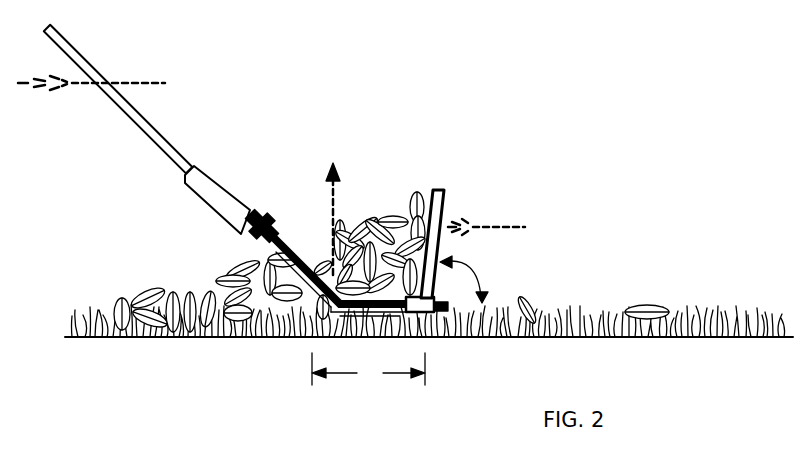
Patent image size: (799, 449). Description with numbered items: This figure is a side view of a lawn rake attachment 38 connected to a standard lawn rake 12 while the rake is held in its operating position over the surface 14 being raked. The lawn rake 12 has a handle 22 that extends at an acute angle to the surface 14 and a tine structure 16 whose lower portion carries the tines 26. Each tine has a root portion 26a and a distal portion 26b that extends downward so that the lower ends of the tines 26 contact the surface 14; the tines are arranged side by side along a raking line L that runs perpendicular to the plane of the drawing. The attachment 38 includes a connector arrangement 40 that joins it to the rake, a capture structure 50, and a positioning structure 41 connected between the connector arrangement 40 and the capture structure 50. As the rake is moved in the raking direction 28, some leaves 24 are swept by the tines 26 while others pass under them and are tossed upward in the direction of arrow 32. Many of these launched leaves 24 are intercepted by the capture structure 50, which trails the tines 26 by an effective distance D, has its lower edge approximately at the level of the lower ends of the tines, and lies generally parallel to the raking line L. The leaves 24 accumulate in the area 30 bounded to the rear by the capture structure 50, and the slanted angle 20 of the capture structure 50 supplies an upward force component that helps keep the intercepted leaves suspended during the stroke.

The lawn rake 12 is at (290, 217).
The surface 14 is at (743, 302).
The tine structure 16 is at (210, 173).
The slanted angle 20 is at (476, 263).
The handle 22 is at (140, 133).
The leaves 24 is at (232, 272).
The tines 26 is at (299, 317).
The root portion 26a is at (260, 252).
The distal portion 26b is at (300, 325).
The raking direction 28 is at (288, 144).
The area 30 is at (370, 176).
The arrow 32 is at (325, 203).
The lawn rake attachment 38 is at (412, 337).
The connector arrangement 40 is at (274, 190).
The positioning structure 41 is at (359, 169).
The capture structure 50 is at (466, 180).
The effective distance D is at (368, 369).
The raking line L is at (309, 327).